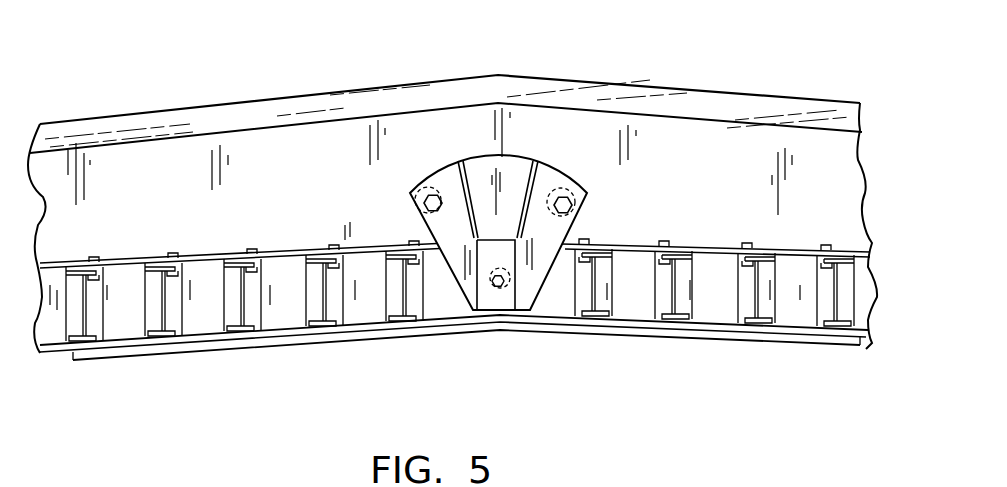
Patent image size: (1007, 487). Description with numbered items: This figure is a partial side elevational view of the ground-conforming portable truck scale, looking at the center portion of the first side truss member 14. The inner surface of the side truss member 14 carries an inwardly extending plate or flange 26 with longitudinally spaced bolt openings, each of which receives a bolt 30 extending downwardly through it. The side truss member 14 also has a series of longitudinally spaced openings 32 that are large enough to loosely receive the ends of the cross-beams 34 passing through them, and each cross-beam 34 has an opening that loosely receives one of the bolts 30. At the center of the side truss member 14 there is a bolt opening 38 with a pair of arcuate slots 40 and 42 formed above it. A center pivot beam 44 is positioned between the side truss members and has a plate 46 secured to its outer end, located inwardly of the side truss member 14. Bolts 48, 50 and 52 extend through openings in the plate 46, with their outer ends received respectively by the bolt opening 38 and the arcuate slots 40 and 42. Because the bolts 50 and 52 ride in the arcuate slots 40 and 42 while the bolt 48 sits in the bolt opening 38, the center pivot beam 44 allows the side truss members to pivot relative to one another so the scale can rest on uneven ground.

The first side truss member 14 is at (636, 84).
The inwardly extending plate or flange 26 is at (777, 246).
The bolt 30 is at (820, 240).
The longitudinally spaced openings 32 is at (815, 296).
The cross-beam 34 is at (848, 282).
The bolt opening 38 is at (511, 300).
The arcuate slot 40 is at (558, 188).
The arcuate slot 42 is at (427, 177).
The center pivot beam 44 is at (512, 265).
The plate 46 is at (552, 243).
The bolt 48 is at (491, 286).
The bolt 50 is at (572, 201).
The bolt 52 is at (424, 201).